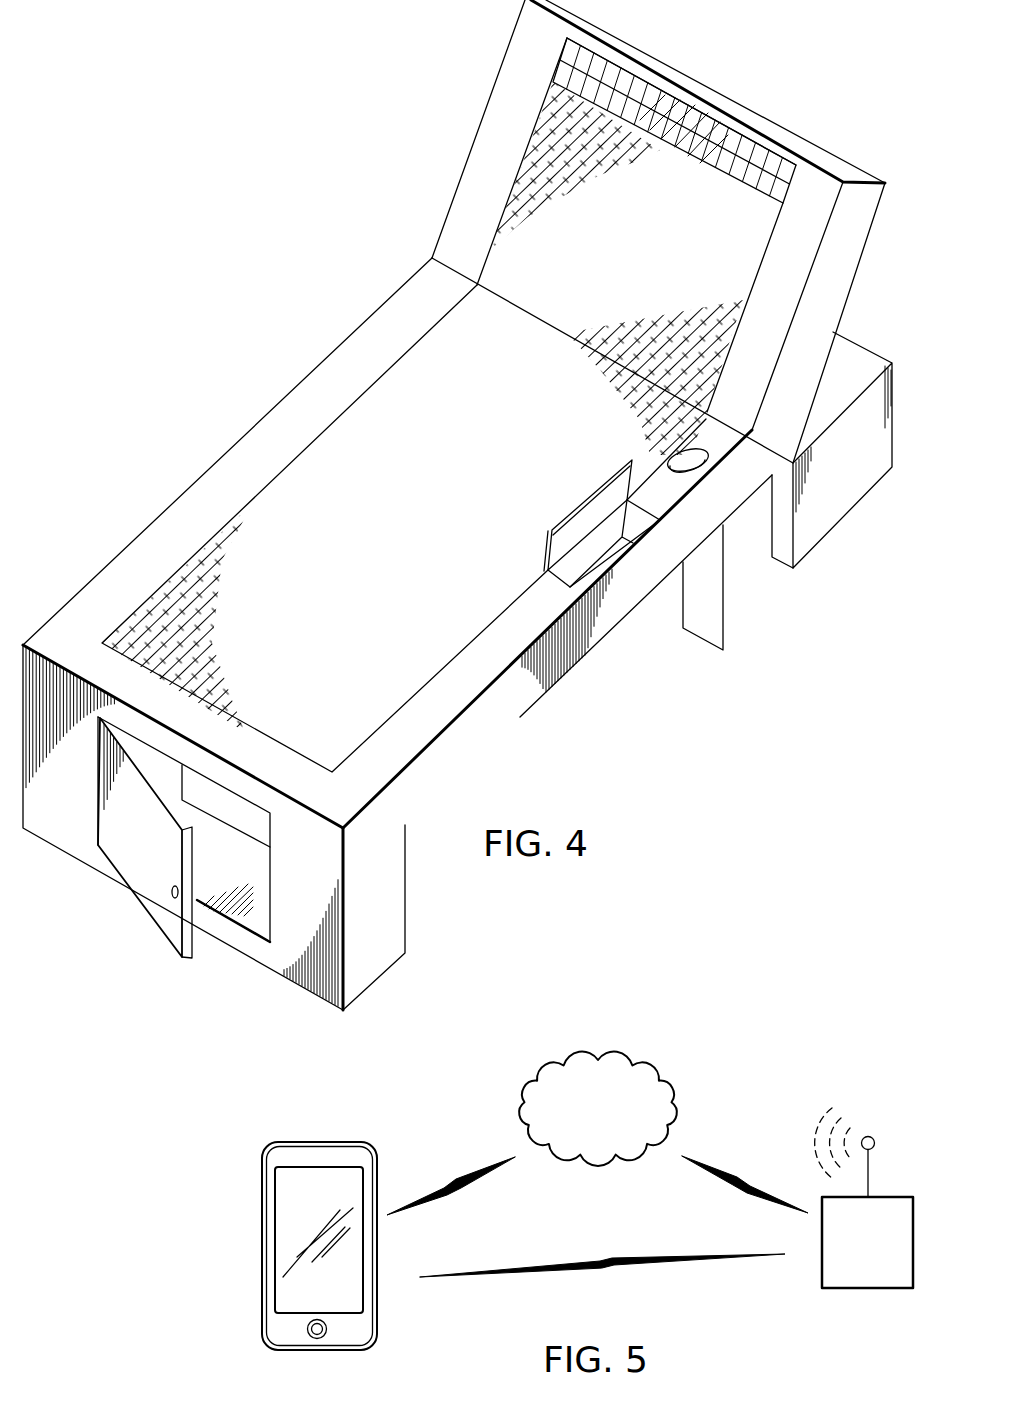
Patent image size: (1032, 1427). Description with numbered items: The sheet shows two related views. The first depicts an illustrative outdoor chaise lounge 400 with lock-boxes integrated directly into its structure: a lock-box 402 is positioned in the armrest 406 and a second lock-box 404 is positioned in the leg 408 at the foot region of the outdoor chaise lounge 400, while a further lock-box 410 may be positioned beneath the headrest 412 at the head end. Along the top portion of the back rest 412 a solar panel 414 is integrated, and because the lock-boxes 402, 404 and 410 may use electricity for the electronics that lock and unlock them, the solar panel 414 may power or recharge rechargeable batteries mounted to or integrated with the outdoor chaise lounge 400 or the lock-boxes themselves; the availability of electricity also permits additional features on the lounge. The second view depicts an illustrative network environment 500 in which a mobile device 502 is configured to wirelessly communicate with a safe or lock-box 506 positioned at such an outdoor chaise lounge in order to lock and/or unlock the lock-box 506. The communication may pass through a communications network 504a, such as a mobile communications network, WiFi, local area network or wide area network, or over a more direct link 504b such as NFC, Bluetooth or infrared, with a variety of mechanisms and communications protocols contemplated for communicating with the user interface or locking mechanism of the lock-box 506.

In FIG. 4, the outdoor chaise lounge 400 is at (212, 310).
In FIG. 4, the lock-box 402 is at (582, 497).
In FIG. 4, the lock-box 404 is at (138, 855).
In FIG. 4, the armrest 406 is at (483, 648).
In FIG. 4, the leg 408 is at (385, 903).
In FIG. 4, the lock-box 410 is at (845, 493).
In FIG. 4, the headrest 412 is at (778, 132).
In FIG. 4, the solar panel 414 is at (707, 122).
In FIG. 5, the network environment 500 is at (728, 1050).
In FIG. 5, the mobile device 502 is at (262, 1245).
In FIG. 5, the communications network 504a is at (600, 1047).
In FIG. 5, the communications network 504b is at (678, 1266).
In FIG. 5, the safe or lock-box 506 is at (895, 1290).